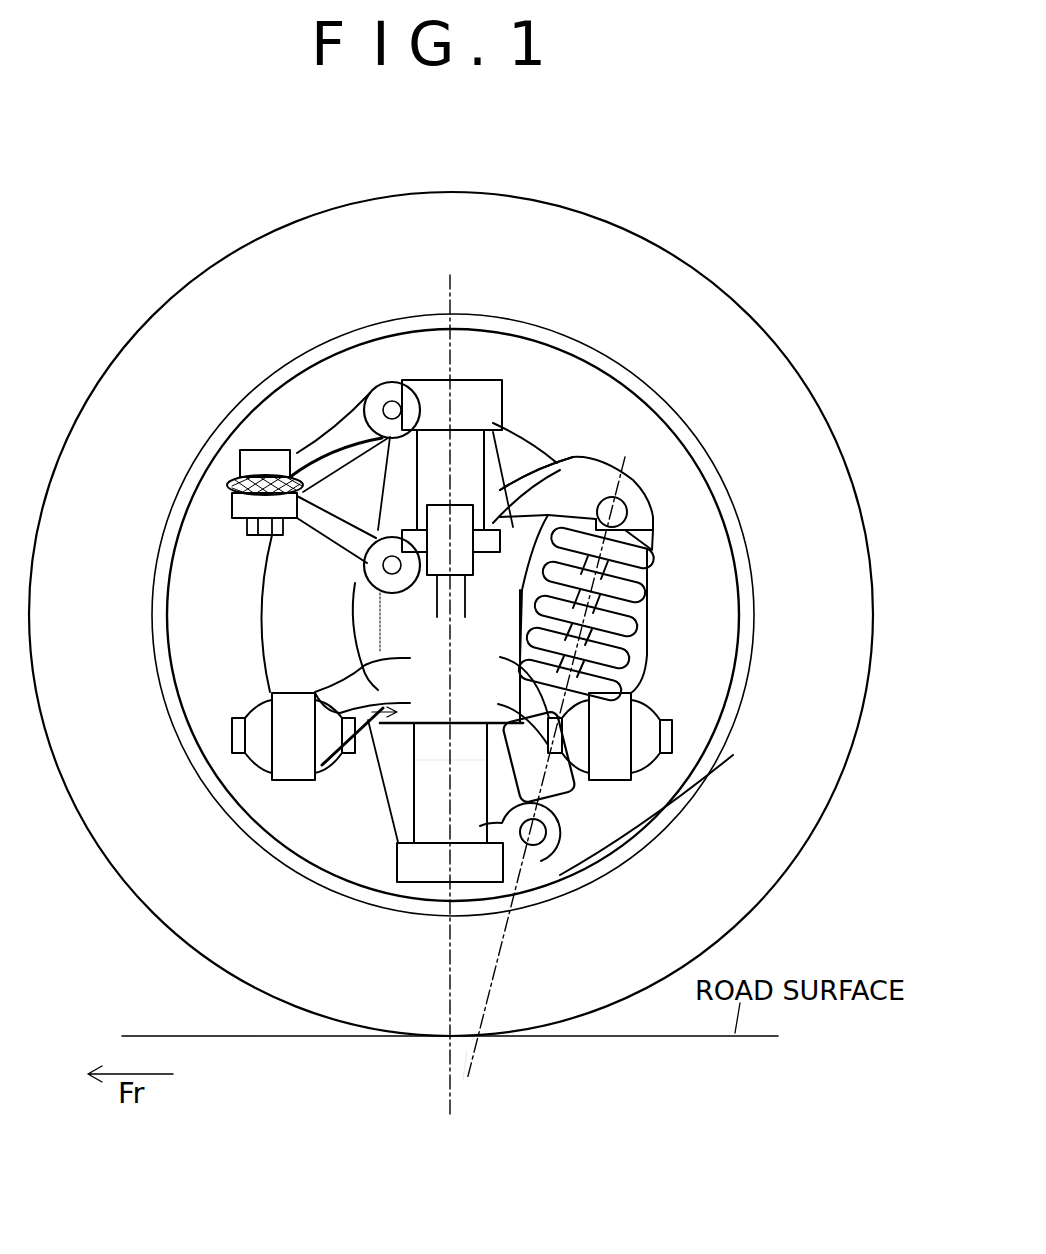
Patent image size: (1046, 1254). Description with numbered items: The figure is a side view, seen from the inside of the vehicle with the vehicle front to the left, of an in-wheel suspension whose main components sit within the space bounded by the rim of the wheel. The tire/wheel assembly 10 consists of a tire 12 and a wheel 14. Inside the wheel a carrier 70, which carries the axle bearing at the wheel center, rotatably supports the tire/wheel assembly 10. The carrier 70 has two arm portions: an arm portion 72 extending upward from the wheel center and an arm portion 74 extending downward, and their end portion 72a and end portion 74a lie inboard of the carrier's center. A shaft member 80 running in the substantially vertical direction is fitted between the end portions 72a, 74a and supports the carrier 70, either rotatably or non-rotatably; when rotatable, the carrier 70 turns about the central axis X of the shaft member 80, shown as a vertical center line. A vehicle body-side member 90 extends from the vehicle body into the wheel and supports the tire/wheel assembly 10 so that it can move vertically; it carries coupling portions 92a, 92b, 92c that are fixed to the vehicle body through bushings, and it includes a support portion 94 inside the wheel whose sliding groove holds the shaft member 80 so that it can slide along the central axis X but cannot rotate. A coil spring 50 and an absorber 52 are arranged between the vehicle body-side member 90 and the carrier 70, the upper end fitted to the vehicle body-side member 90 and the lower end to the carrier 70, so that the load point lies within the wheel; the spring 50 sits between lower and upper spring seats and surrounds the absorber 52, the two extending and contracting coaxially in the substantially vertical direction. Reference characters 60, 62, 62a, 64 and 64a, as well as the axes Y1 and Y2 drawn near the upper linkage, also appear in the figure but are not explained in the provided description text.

The tire/wheel assembly 10 is at (451, 600).
The tire 12 is at (753, 372).
The wheel 14 is at (573, 350).
The spring 50 is at (649, 593).
The absorber 52 is at (562, 783).
The upper link mechanism 60 is at (241, 430).
The first upper link 62 is at (350, 432).
The joint portion of first upper link 62a is at (265, 463).
The second upper link 64 is at (352, 528).
The joint portion of second upper link 64a is at (237, 520).
The carrier 70 is at (406, 619).
The arm portion 72 is at (467, 438).
The end portion 72a is at (475, 398).
The arm portion 74 is at (381, 843).
The end portion 74a is at (418, 878).
The shaft member 80 is at (422, 798).
The vehicle body-side member 90 is at (446, 770).
The coupling portion 92a is at (617, 717).
The coupling portion 92b is at (560, 478).
The coupling portion 92c is at (287, 713).
The support portion 94 is at (493, 635).
The central axis X is at (450, 973).
The pivot axis of first upper link Y1 is at (392, 410).
The pivot axis of second upper link Y2 is at (392, 565).